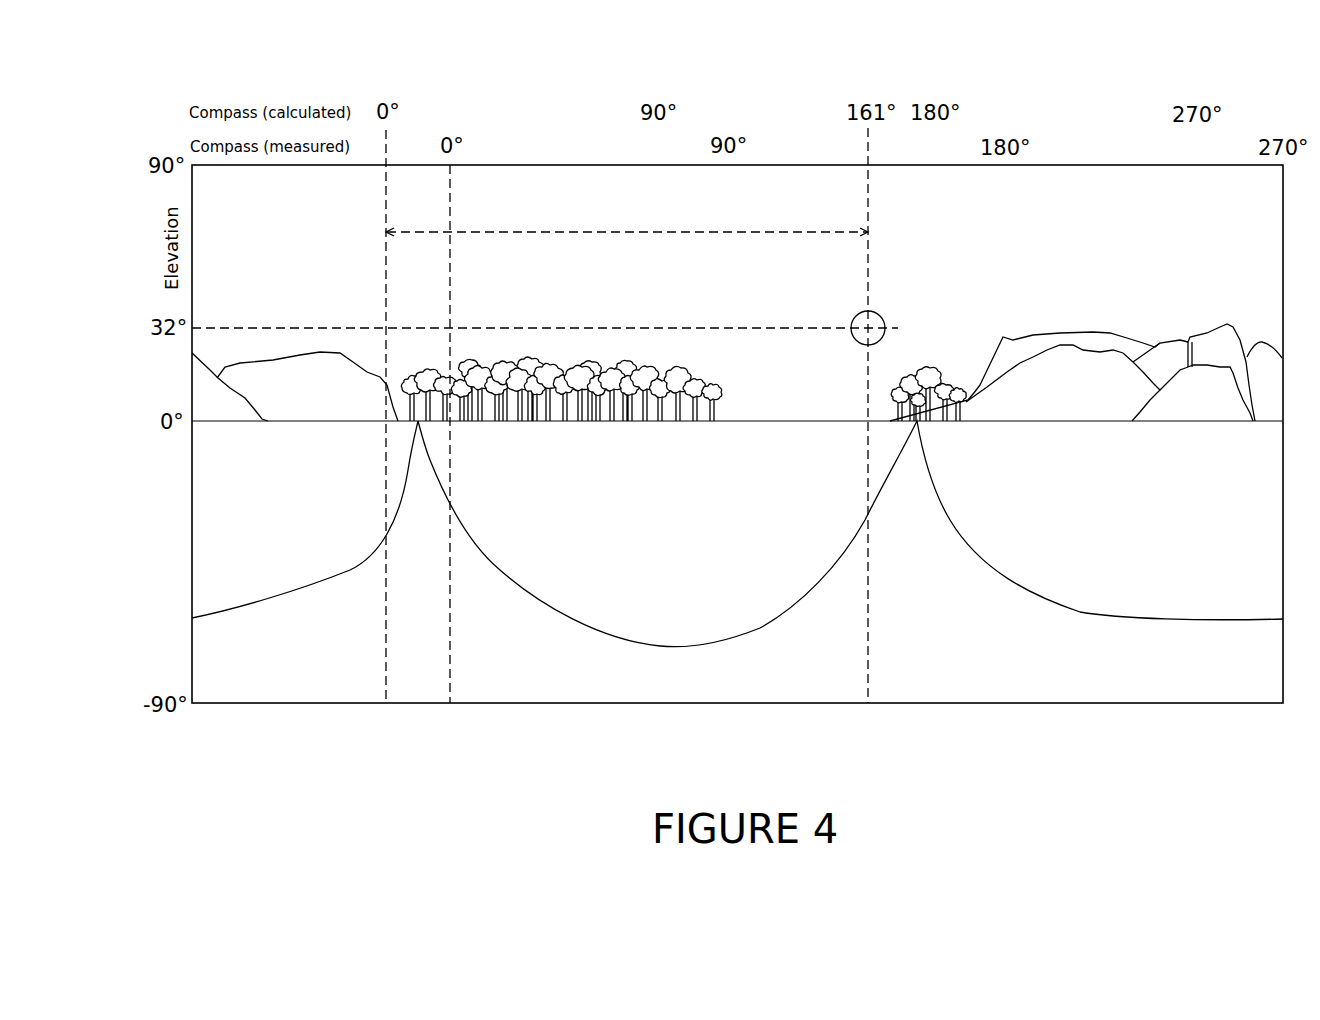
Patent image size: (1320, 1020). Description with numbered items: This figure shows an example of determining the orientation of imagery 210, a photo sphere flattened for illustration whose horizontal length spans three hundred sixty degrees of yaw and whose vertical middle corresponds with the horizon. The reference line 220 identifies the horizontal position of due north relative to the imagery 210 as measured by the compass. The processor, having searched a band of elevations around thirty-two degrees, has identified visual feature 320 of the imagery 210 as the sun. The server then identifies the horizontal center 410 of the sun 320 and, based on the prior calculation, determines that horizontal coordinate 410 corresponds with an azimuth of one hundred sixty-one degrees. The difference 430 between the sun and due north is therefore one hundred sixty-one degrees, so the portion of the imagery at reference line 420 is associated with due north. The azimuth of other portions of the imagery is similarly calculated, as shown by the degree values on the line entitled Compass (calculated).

The imagery 210 is at (192, 567).
The reference line 220 is at (452, 180).
The visual feature 320 is at (857, 313).
The horizontal center 410 is at (867, 200).
The reference line 420 is at (387, 187).
The difference 430 is at (670, 233).